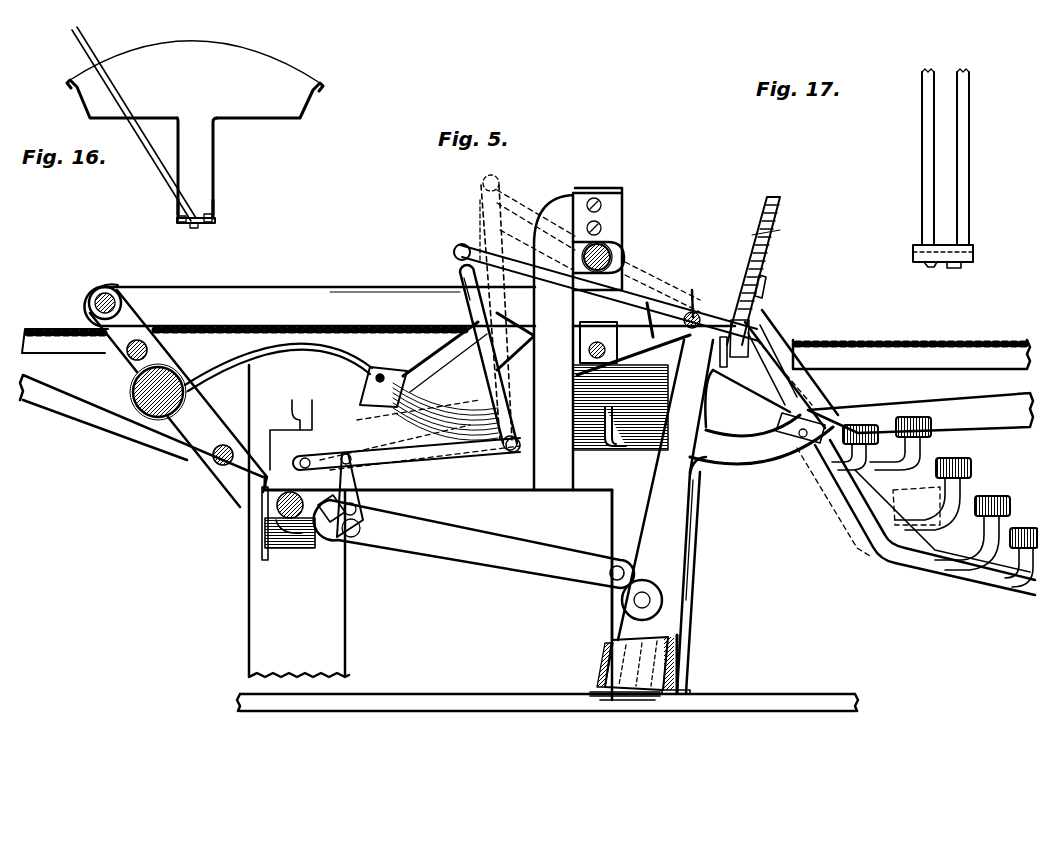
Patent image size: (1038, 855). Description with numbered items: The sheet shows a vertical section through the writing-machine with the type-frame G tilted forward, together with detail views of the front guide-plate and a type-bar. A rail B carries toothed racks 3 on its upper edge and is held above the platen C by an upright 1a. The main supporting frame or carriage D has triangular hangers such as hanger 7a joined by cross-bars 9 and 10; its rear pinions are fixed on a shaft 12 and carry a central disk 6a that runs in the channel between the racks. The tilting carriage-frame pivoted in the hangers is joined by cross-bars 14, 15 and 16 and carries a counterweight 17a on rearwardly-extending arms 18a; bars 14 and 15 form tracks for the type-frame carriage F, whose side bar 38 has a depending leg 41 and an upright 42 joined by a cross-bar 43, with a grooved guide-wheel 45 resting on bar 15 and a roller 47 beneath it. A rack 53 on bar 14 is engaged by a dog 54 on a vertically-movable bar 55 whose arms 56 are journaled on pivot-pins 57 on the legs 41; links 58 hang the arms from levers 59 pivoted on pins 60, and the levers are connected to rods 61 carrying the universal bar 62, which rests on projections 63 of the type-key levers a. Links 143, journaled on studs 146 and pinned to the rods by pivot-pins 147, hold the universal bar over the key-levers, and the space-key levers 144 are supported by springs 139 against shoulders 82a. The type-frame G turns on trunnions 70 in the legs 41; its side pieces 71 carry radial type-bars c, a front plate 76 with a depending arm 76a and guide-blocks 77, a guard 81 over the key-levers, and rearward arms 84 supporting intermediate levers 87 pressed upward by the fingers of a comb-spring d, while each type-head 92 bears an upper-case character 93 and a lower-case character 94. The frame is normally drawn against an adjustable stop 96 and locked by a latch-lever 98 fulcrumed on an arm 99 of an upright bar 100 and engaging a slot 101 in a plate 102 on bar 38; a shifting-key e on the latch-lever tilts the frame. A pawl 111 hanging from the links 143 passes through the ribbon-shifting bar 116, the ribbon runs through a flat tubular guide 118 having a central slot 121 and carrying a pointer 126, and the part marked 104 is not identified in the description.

In FIG. 5, the upright 1a is at (341, 604).
In FIG. 5, the toothed rack 3 is at (900, 346).
In FIG. 5, the central rib or disk 6a is at (118, 286).
In FIG. 5, the hanger 7a is at (328, 292).
In FIG. 5, the cross-bar 9 is at (129, 356).
In FIG. 5, the cross-bar 10 is at (215, 461).
In FIG. 5, the shaft 12 is at (96, 300).
In FIG. 5, the cross-bar 14 is at (276, 511).
In FIG. 5, the cross-bar 15 is at (614, 256).
In FIG. 5, the cross-bar 16 is at (302, 536).
In FIG. 5, the counterweight 17a is at (147, 413).
In FIG. 5, the rearwardly-extending arm 18a is at (238, 343).
In FIG. 5, the side bar 38 is at (438, 472).
In FIG. 5, the leg 41 is at (626, 565).
In FIG. 5, the upright 42 is at (593, 342).
In FIG. 5, the cross-bar 43 is at (590, 189).
In FIG. 5, the grooved guide-wheel 45 is at (618, 240).
In FIG. 5, the roller 47 is at (612, 290).
In FIG. 5, the rack 53 is at (263, 561).
In FIG. 5, the dog 54 is at (322, 523).
In FIG. 5, the vertically-movable bar 55 is at (354, 538).
In FIG. 5, the arm 56 is at (535, 574).
In FIG. 5, the pivot-pin 57 is at (626, 573).
In FIG. 5, the link 58 is at (350, 467).
In FIG. 5, the lever 59 is at (432, 452).
In FIG. 5, the pivot-pin 60 is at (236, 491).
In FIG. 5, the upwardly-extending rod 61 is at (468, 300).
In FIG. 5, the universal bar 62 is at (460, 270).
In FIG. 5, the projection 63 is at (474, 310).
In FIG. 5, the trunnion 70 is at (650, 600).
In FIG. 5, the side piece 71 is at (694, 539).
In FIG. 16, the plate 76 is at (195, 79).
In FIG. 5, the plate 76 is at (611, 650).
In FIG. 16, the depending arm 76a is at (213, 162).
In FIG. 5, the depending arm 76a is at (677, 650).
In FIG. 16, the guide-block 77 is at (178, 216).
In FIG. 5, the guard 81 is at (766, 296).
In FIG. 5, the pin or shoulder 82a is at (768, 235).
In FIG. 5, the arm 84 is at (366, 400).
In FIG. 5, the intermediate lever 87 is at (598, 410).
In FIG. 16, the type-head 92 is at (216, 221).
In FIG. 17, the type-head 92 is at (945, 251).
In FIG. 5, the type-head 92 is at (594, 684).
In FIG. 17, the upper-case printing character 93 is at (924, 259).
In FIG. 17, the lower-case printing character 94 is at (956, 269).
In FIG. 5, the adjustable stop 96 is at (608, 447).
In FIG. 5, the latch-lever 98 is at (778, 410).
In FIG. 5, the arm 99 is at (761, 438).
In FIG. 5, the upright bar 100 is at (665, 490).
In FIG. 5, the slot 101 is at (713, 380).
In FIG. 5, the plate 102 is at (747, 398).
In FIG. 5, the hook 104 is at (290, 404).
In FIG. 5, the pawl 111 is at (657, 310).
In FIG. 5, the ribbon-shifting bar 116 is at (760, 333).
In FIG. 5, the flat tubular guide 118 is at (680, 660).
In FIG. 5, the slot 121 is at (655, 699).
In FIG. 5, the pointer or indicator 126 is at (680, 690).
In FIG. 5, the spring 139 is at (760, 316).
In FIG. 5, the link 143 is at (517, 257).
In FIG. 5, the space-key lever 144 is at (1000, 582).
In FIG. 5, the pivot pin or stud 146 is at (695, 306).
In FIG. 5, the pivot-pin 147 is at (470, 270).
In FIG. 5, the rail or guideway B is at (838, 352).
In FIG. 5, the platen C is at (436, 705).
In FIG. 5, the main supporting frame or carriage D is at (273, 285).
In FIG. 5, the type-frame carriage F is at (573, 577).
In FIG. 16, the type-frame G is at (197, 140).
In FIG. 5, the type-frame G is at (698, 510).
In FIG. 5, the type-key lever a is at (891, 503).
In FIG. 16, the type-bar c is at (134, 117).
In FIG. 17, the type-bar c is at (921, 112).
In FIG. 5, the type-bar c is at (775, 197).
In FIG. 5, the comb-spring d is at (402, 391).
In FIG. 5, the shifting-key e is at (860, 424).